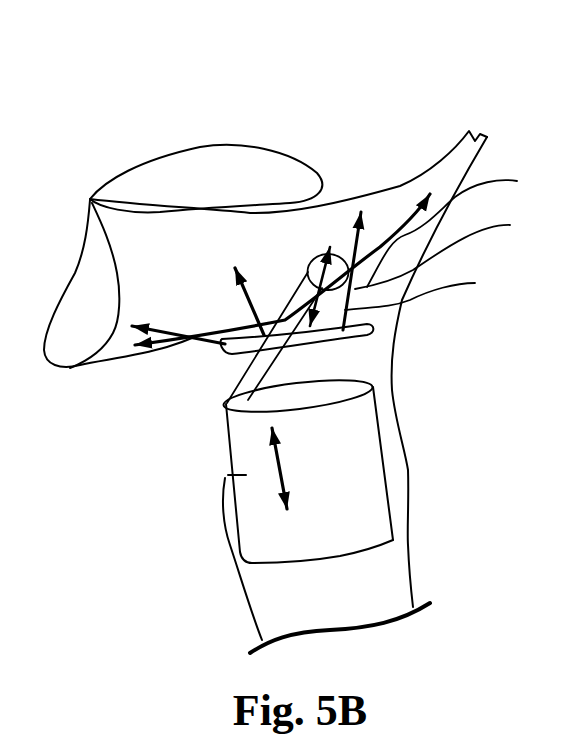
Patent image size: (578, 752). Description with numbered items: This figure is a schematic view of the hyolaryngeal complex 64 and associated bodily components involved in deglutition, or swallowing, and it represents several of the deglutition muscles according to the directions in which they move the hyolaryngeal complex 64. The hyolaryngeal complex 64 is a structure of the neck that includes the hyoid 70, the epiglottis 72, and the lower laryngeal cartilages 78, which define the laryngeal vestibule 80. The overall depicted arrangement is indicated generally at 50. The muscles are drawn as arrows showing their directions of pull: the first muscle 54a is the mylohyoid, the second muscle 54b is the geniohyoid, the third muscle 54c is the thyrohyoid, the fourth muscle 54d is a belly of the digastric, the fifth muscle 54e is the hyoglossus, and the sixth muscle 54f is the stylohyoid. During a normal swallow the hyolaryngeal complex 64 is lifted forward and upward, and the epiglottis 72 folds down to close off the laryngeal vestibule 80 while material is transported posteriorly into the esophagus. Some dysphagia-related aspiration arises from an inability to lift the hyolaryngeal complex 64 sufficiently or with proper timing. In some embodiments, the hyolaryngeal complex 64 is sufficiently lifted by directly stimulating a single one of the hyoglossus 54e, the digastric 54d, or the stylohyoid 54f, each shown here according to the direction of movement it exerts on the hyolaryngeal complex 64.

The implant assembly 50 is at (482, 95).
The first muscle 54a is at (285, 331).
The second muscle 54b is at (200, 336).
The third muscle 54c is at (280, 477).
The fourth muscle 54d is at (346, 257).
The fifth muscle 54e is at (453, 251).
The sixth muscle 54f is at (426, 271).
The hyolaryngeal complex 64 is at (186, 442).
The hyoid 70 is at (224, 346).
The epiglottis 72 is at (323, 247).
The lower laryngeal cartilages 78 is at (226, 478).
The vestibule 80 is at (358, 356).